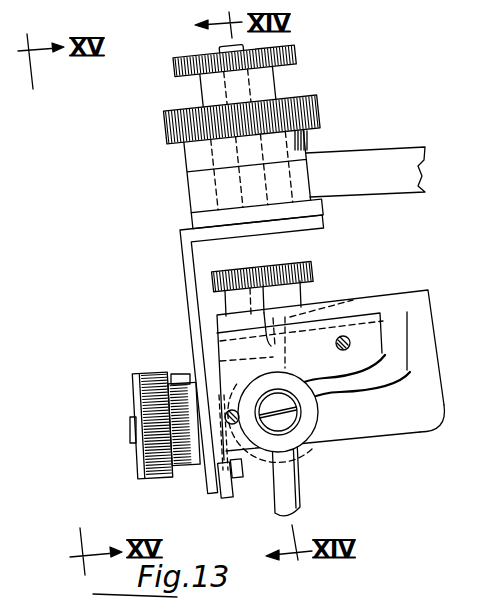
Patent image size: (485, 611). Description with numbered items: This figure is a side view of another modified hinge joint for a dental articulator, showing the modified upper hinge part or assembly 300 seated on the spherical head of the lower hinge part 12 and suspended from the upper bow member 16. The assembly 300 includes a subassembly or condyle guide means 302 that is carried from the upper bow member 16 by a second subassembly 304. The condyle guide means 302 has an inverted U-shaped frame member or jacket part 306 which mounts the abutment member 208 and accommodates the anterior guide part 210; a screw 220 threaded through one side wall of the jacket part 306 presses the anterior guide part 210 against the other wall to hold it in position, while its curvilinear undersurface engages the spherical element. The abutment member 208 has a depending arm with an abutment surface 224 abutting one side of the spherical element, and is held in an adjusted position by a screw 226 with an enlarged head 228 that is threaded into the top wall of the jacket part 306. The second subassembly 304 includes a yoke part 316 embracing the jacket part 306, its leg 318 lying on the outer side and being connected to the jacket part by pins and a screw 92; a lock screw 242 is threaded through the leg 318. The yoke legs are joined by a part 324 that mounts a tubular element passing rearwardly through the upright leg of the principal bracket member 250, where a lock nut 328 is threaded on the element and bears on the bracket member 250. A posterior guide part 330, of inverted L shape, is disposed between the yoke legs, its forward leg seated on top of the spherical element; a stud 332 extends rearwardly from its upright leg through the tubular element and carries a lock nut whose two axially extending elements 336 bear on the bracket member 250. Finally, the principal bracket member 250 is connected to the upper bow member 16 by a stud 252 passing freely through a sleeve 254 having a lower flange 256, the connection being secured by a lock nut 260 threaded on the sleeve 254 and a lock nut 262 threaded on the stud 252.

The lower hinge part 12 is at (318, 501).
The upper bow member 16 is at (405, 153).
The screw 92 is at (290, 422).
The abutment member 208 is at (428, 373).
The anterior guide part 210 is at (390, 378).
The screw 220 is at (336, 344).
The abutment surface 224 is at (365, 428).
The screw 226 is at (330, 304).
The enlarged head 228 is at (314, 270).
The lock screw 242 is at (240, 474).
The principal bracket member 250 is at (178, 238).
The stud 252 is at (226, 101).
The sleeve 254 is at (192, 165).
The flange 256 is at (316, 205).
The lock nut 260 is at (316, 98).
The lock nut 262 is at (295, 55).
The upper hinge part 300 is at (122, 337).
The condyle guide means 302 is at (415, 343).
The second subassembly 304 is at (308, 147).
The jacket part 306 is at (260, 273).
The yoke part 316 is at (225, 498).
The leg 318 is at (299, 477).
The part 324 is at (158, 458).
The lock nut 328 is at (188, 480).
The posterior guide part 330 is at (222, 500).
The stud 332 is at (131, 430).
The axially extending elements 336 is at (183, 372).